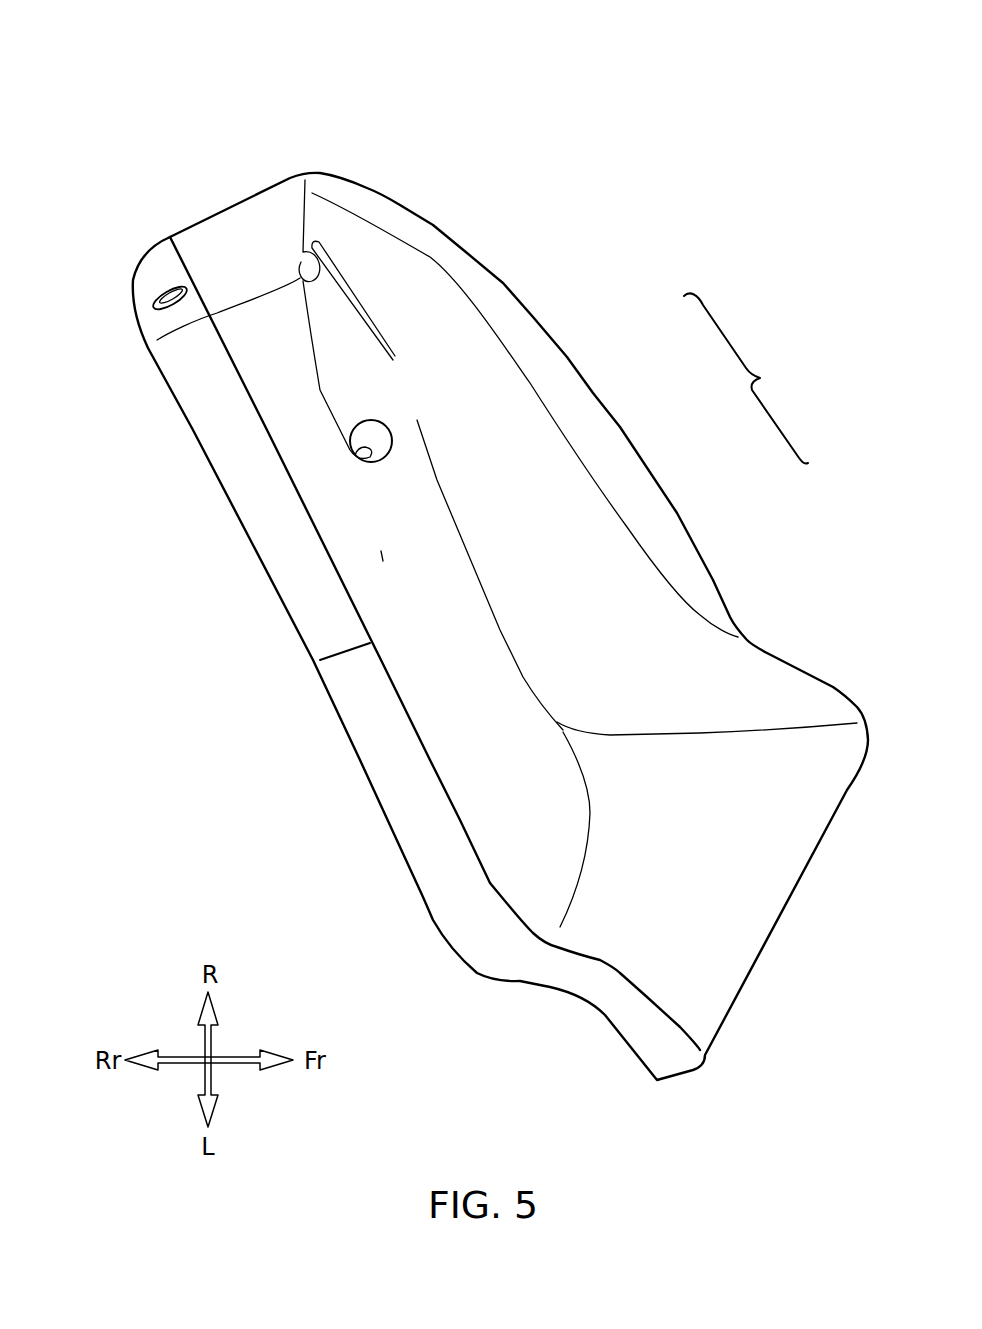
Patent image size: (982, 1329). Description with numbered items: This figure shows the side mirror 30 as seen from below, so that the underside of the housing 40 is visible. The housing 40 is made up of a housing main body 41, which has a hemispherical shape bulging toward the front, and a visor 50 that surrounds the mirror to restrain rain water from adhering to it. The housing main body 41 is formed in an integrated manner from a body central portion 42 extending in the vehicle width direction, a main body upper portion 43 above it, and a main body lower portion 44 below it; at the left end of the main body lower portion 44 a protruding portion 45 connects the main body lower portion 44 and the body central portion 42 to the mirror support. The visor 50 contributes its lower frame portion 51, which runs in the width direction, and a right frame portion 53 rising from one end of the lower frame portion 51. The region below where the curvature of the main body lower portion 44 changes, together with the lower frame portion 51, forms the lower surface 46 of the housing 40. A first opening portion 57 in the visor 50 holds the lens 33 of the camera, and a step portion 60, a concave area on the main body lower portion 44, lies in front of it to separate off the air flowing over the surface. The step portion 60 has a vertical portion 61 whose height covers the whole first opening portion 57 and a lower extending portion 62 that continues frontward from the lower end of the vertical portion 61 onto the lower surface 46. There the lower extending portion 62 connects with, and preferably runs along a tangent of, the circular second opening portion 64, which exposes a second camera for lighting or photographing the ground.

The side mirror 30 is at (368, 117).
The lens 33 is at (167, 307).
The housing 40 is at (505, 283).
The housing main body 41 is at (746, 378).
The body central portion 42 is at (600, 437).
The main body upper portion 43 is at (503, 380).
The main body lower portion 44 is at (543, 582).
The protruding portion 45 is at (760, 865).
The lower surface 46 is at (380, 557).
The visor 50 is at (370, 717).
The lower frame portion 51 is at (408, 808).
The right frame portion 53 is at (153, 262).
The first opening portion 57 is at (153, 285).
The step portion 60 is at (356, 268).
The vertical portion 61 is at (302, 258).
The lower extending portion 62 is at (320, 390).
The second opening portion 64 is at (365, 460).